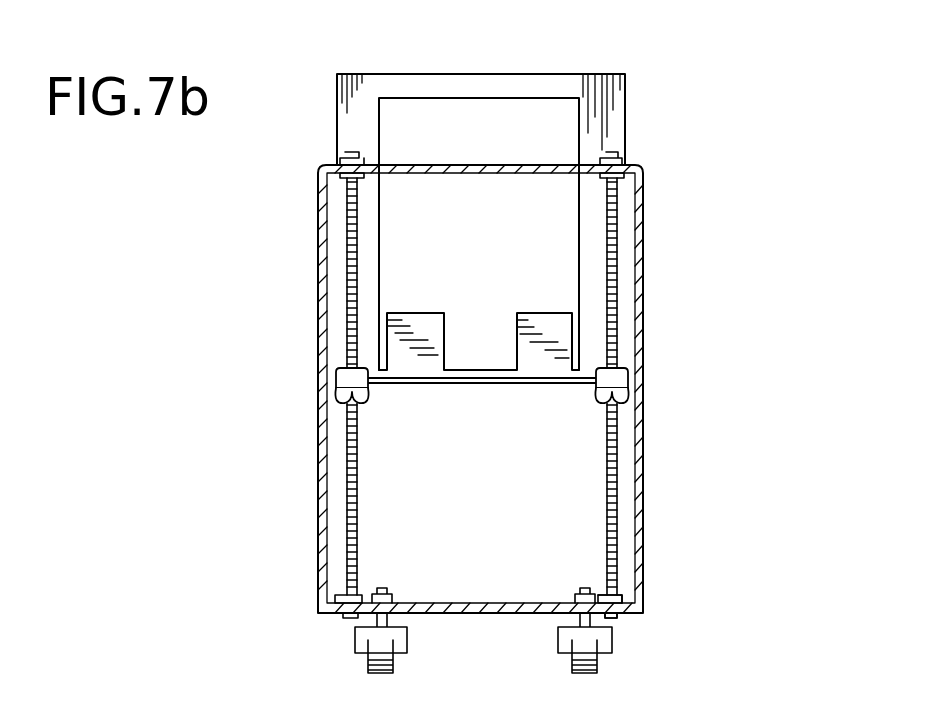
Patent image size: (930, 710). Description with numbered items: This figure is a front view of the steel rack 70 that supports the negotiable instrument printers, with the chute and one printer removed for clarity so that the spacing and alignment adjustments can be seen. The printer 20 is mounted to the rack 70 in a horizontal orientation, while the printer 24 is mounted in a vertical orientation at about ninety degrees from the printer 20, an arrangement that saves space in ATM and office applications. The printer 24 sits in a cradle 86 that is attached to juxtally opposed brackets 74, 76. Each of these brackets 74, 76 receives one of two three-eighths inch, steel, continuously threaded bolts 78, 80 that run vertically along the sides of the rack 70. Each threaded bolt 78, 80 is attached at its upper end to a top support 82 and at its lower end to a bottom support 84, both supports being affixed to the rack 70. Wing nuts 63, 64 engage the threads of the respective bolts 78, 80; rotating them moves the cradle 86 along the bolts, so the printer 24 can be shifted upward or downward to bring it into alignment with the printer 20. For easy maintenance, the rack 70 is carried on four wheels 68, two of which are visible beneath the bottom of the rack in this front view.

The printer 20 is at (624, 78).
The printer 24 is at (390, 230).
The cradle 86 is at (542, 330).
The rack 70 is at (643, 313).
The threaded bolt 78 is at (343, 513).
The threaded bolt 80 is at (620, 492).
The top support 82 is at (625, 156).
The bottom support 84 is at (635, 613).
The bracket 74 is at (340, 370).
The bracket 76 is at (622, 380).
The wing nut 63 is at (337, 398).
The wing nut 64 is at (630, 395).
The wheels 68 is at (558, 657).